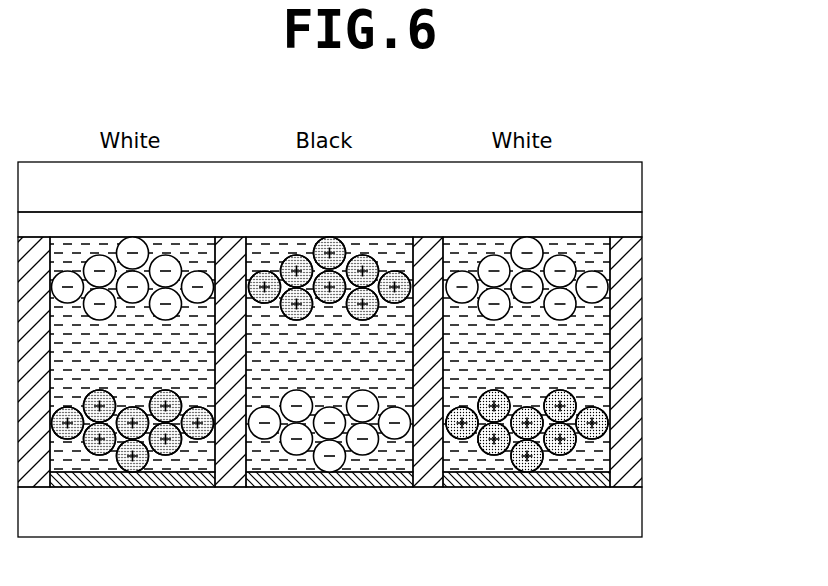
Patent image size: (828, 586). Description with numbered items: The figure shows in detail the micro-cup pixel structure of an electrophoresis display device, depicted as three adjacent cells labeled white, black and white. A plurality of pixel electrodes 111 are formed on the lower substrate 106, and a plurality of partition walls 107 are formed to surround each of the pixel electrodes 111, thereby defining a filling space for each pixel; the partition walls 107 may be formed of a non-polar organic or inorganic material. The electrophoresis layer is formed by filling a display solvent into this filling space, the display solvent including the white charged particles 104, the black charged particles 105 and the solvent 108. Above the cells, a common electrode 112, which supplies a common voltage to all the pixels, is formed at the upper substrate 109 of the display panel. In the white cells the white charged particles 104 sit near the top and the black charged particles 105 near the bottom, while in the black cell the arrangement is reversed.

The white charged particles 104 is at (170, 320).
The black charged particles 105 is at (112, 393).
The lower substrate 106 is at (642, 518).
The partition walls 107 is at (642, 312).
The solvent 108 is at (583, 372).
The upper substrate 109 is at (642, 191).
The pixel electrodes 111 is at (627, 485).
The common electrode 112 is at (642, 230).